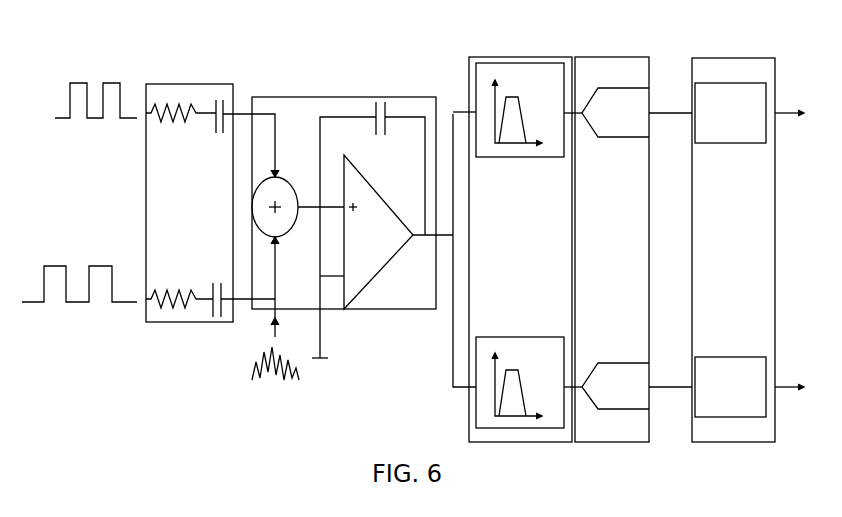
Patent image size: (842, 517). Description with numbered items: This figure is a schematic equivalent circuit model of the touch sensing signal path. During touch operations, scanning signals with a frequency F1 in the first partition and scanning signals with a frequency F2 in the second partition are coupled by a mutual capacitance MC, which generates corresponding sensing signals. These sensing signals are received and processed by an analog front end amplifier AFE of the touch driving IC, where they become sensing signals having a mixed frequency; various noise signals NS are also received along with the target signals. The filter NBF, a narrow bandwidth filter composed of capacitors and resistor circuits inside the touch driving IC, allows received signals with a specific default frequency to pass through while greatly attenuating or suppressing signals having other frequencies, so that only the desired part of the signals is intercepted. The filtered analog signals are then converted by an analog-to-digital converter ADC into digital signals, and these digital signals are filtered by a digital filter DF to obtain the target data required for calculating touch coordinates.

The frequency F1 is at (83, 104).
The frequency F2 is at (76, 284).
The mutual capacitance MC is at (165, 84).
The analog front end amplifier AFE is at (358, 97).
The noise signals NS is at (275, 380).
The filter NBF is at (495, 57).
The analog-to-digital converter ADC is at (590, 57).
The digital filter DF is at (695, 58).